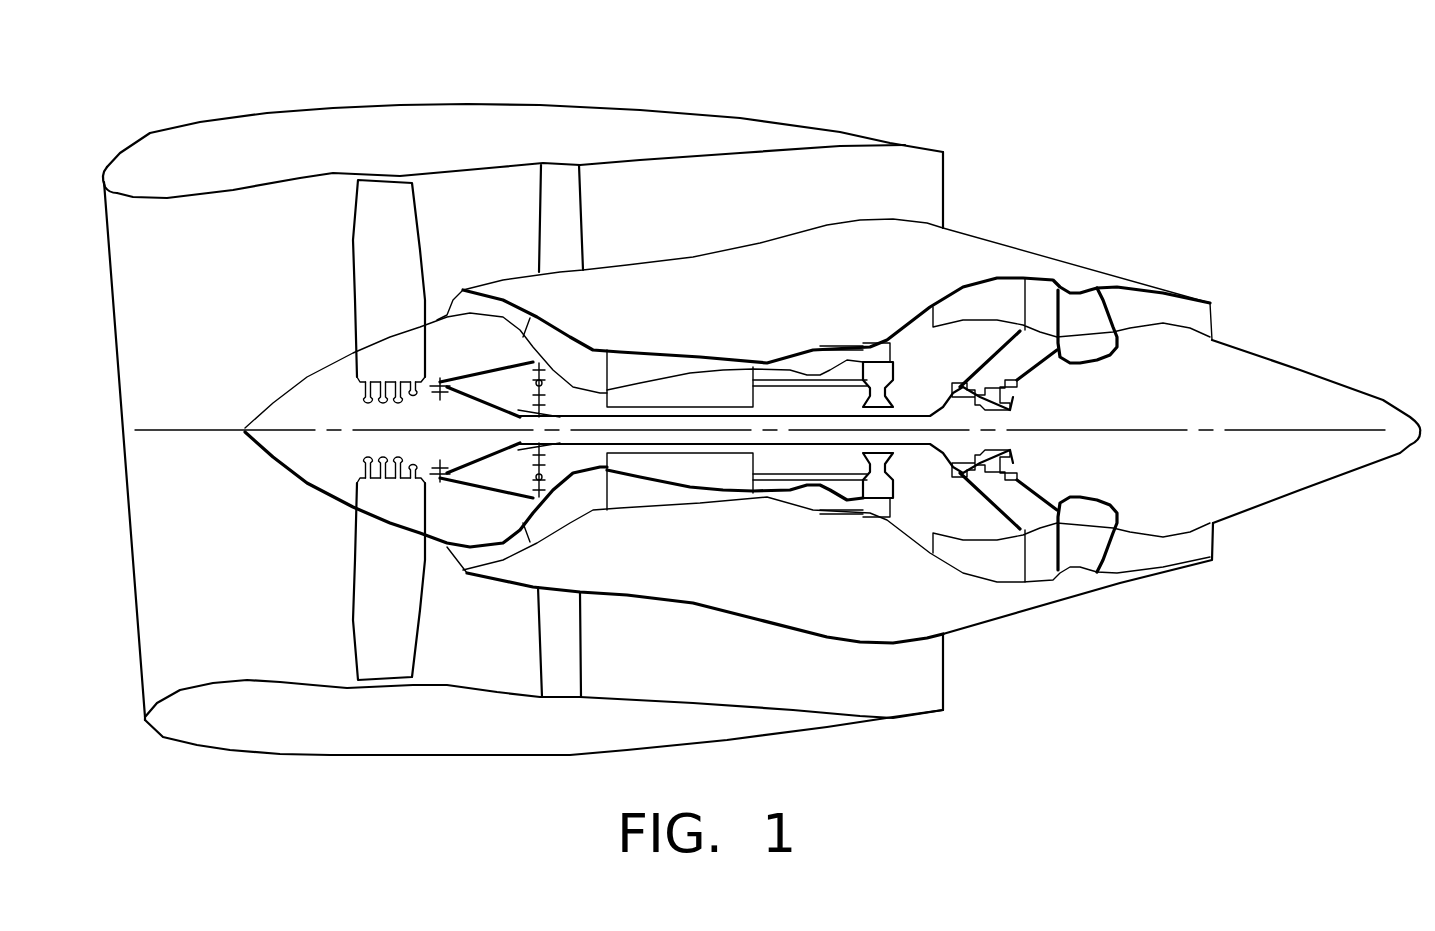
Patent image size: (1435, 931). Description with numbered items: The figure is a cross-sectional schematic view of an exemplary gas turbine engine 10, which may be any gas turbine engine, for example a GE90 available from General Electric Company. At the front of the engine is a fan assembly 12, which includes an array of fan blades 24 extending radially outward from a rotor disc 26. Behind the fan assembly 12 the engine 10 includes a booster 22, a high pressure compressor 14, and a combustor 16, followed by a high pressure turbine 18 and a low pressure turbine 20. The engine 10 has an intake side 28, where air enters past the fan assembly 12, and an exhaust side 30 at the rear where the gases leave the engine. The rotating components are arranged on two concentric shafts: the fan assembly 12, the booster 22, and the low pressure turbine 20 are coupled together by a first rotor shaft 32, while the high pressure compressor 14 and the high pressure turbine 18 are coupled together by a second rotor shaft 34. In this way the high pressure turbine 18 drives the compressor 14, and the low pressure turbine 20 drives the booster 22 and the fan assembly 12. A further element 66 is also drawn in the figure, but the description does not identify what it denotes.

The gas turbine engine 10 is at (862, 68).
The fan assembly 12 is at (346, 430).
The high pressure compressor 14 is at (625, 365).
The combustor 16 is at (822, 360).
The high pressure turbine 18 is at (865, 534).
The low pressure turbine 20 is at (977, 297).
The booster 22 is at (500, 311).
The fan blades 24 is at (397, 268).
The rotor disc 26 is at (320, 468).
The intake side 28 is at (88, 222).
The exhaust side 30 is at (1005, 174).
The first rotor shaft 32 is at (697, 490).
The second rotor shaft 34 is at (650, 450).
The outlet guide vane strut 66 is at (437, 311).